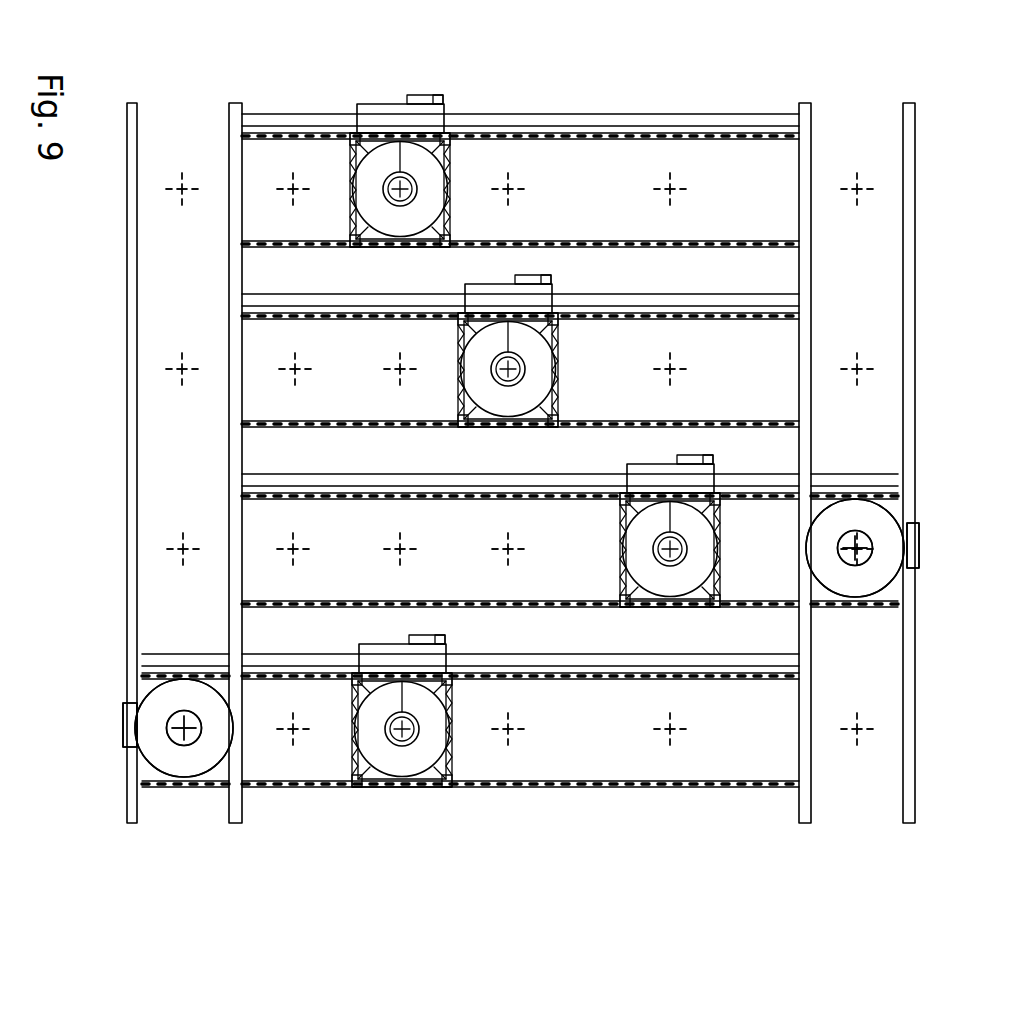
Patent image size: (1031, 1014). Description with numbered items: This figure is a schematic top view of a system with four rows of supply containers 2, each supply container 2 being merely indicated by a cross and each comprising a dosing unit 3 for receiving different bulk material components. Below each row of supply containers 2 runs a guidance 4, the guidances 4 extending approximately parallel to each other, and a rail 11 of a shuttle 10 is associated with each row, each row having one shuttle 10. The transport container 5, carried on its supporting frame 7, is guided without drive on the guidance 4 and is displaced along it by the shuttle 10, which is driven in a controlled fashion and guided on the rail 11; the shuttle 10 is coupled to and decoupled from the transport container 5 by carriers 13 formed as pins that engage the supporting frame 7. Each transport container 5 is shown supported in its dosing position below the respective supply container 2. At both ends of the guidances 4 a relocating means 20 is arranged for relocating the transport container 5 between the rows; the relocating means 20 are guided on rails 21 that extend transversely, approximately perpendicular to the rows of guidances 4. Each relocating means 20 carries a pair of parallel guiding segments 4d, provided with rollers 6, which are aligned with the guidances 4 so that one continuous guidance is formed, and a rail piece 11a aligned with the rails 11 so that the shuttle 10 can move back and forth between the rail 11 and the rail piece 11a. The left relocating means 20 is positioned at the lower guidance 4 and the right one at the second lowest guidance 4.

The supply container 2 is at (668, 184).
The dosing unit 3 is at (668, 184).
The guidance 4 is at (521, 448).
The guiding segments 4d is at (912, 502).
The transport container 5 is at (400, 224).
The rollers 6 is at (596, 132).
The supporting frame 7 is at (456, 222).
The shuttle 10 is at (378, 125).
The rail 11 is at (471, 118).
The rail piece 11a is at (905, 478).
The carriers 13 is at (436, 100).
The relocating means 20 is at (936, 574).
The rails 21 is at (138, 545).